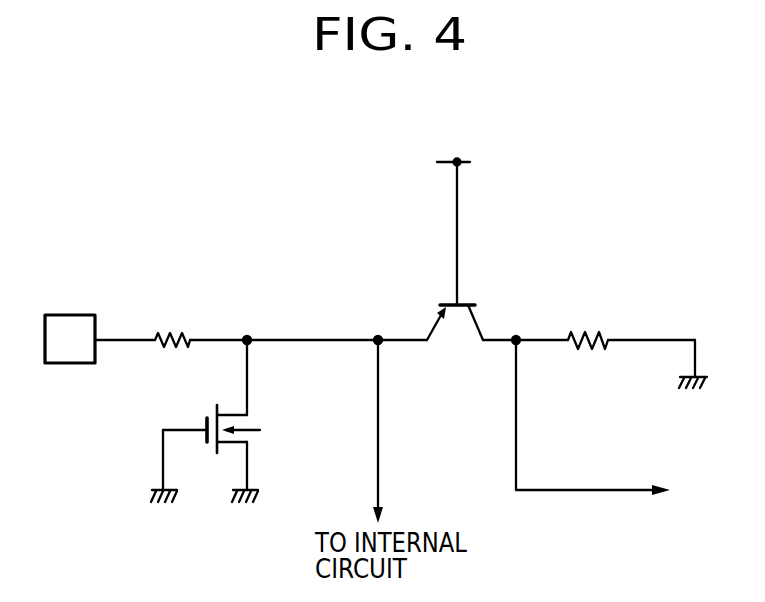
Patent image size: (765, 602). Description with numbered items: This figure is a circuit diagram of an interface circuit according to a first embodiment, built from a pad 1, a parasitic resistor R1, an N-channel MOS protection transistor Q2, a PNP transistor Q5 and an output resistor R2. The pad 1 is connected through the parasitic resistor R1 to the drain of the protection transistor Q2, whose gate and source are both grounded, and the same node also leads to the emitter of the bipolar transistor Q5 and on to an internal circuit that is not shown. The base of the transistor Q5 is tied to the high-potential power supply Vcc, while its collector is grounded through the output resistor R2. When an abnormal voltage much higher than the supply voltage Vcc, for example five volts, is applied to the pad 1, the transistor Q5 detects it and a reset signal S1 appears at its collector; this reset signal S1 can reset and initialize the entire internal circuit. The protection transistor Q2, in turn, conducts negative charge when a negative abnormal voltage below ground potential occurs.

The pad 1 is at (62, 315).
The parasitic resistor R1 is at (172, 329).
The output resistor R2 is at (588, 330).
The N-channel MOS protection transistor Q2 is at (243, 436).
The PNP transistor Q5 is at (478, 320).
The high-potential power supply system Vcc is at (476, 163).
The reset signal S1 is at (600, 488).